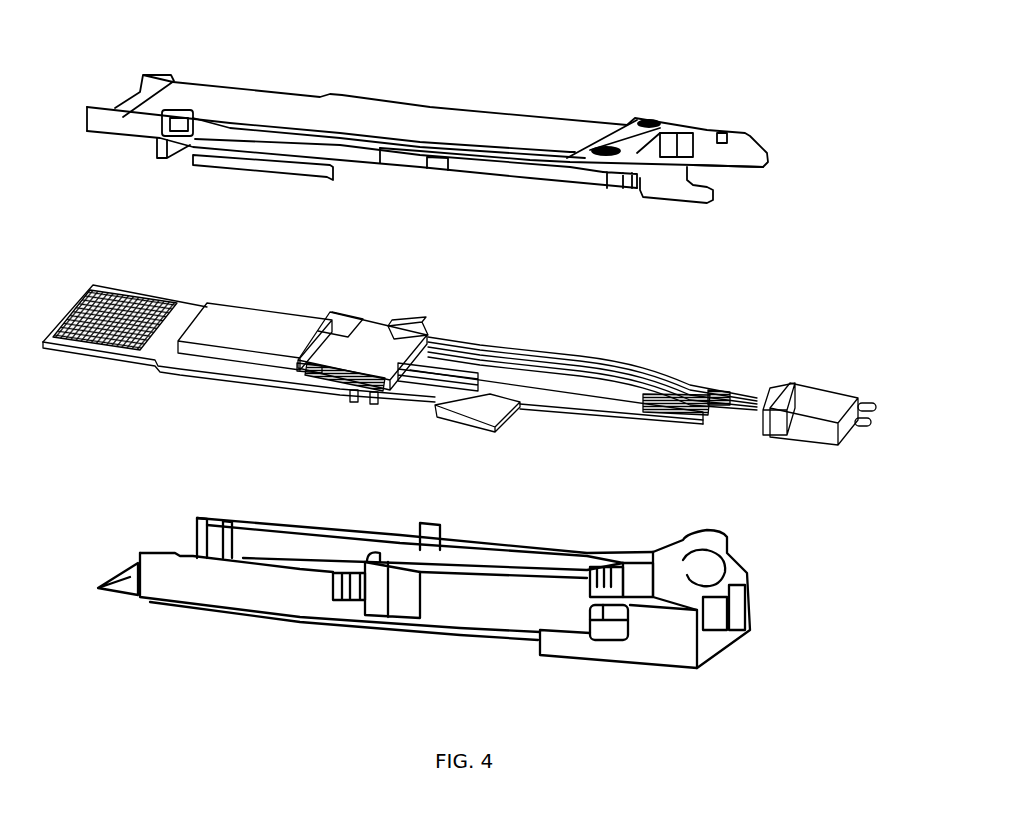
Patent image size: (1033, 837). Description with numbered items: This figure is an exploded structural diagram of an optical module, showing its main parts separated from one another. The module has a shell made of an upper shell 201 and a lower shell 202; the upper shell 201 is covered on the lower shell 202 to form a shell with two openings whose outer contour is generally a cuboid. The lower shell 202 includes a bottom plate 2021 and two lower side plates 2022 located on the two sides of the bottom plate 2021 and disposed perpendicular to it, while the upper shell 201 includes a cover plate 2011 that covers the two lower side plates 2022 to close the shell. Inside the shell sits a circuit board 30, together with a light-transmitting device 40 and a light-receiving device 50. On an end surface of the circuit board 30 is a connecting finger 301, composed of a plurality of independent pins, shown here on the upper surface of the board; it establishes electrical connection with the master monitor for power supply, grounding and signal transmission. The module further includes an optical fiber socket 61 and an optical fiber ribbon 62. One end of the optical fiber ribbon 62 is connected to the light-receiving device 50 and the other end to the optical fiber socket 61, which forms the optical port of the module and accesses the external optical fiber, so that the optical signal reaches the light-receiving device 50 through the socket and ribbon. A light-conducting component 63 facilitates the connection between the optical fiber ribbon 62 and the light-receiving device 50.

The upper shell 201 is at (445, 60).
The cover plate 2011 is at (403, 118).
The circuit board 30 is at (162, 345).
The connecting finger 301 is at (83, 345).
The light-receiving device 50 is at (382, 315).
The light-conducting component 63 is at (413, 325).
The optical fiber ribbon 62 is at (530, 347).
The optical fiber socket 61 is at (820, 430).
The light-transmitting device 40 is at (381, 425).
The lower shell 202 is at (100, 653).
The bottom plate 2021 is at (128, 578).
The lower side plates 2022 is at (188, 590).